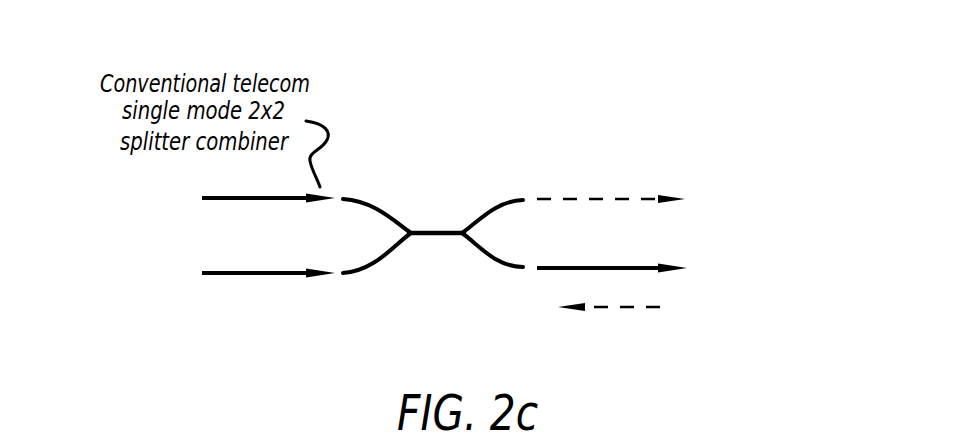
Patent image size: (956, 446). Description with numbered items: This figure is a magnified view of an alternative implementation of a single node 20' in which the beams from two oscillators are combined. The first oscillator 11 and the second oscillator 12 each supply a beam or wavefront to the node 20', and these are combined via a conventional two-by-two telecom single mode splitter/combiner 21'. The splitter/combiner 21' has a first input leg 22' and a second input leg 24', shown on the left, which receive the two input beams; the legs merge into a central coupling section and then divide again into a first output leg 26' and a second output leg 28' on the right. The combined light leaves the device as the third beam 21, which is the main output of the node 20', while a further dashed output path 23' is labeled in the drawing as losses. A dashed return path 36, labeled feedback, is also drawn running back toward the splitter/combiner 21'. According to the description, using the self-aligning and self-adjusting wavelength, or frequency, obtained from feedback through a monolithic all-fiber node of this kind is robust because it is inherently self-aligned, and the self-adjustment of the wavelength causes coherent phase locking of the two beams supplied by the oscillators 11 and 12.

The first oscillator 11 is at (234, 200).
The second oscillator 12 is at (228, 275).
The single node 20' is at (687, 107).
The conventional 2×2 telecom single mode splitter/combiner 21' is at (468, 164).
The first input leg 22' is at (377, 190).
The second input leg 24' is at (381, 276).
The first output leg 26' is at (506, 223).
The second output leg 28' is at (497, 286).
The loss output port 23' is at (652, 177).
The third beam 21 is at (618, 249).
The feedback path 36 is at (657, 307).